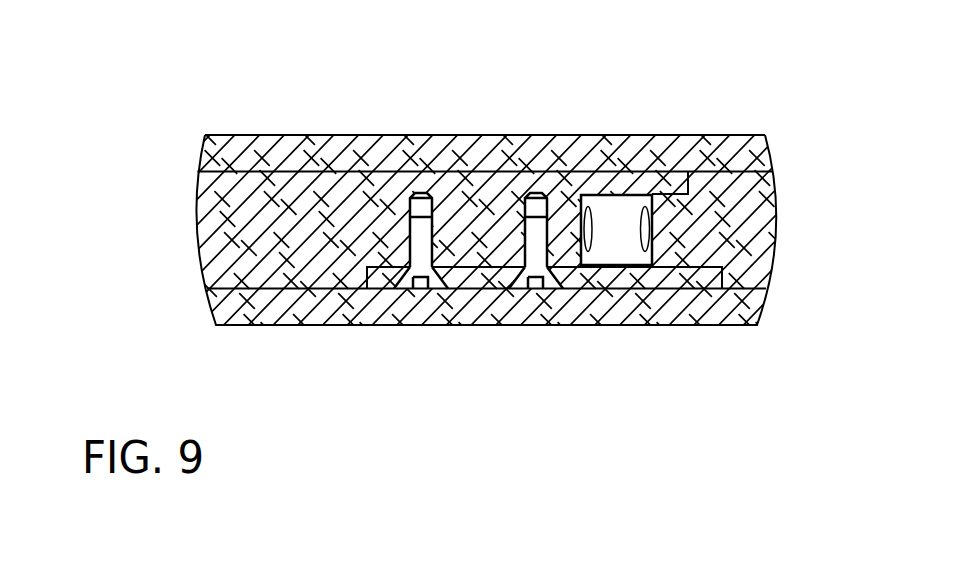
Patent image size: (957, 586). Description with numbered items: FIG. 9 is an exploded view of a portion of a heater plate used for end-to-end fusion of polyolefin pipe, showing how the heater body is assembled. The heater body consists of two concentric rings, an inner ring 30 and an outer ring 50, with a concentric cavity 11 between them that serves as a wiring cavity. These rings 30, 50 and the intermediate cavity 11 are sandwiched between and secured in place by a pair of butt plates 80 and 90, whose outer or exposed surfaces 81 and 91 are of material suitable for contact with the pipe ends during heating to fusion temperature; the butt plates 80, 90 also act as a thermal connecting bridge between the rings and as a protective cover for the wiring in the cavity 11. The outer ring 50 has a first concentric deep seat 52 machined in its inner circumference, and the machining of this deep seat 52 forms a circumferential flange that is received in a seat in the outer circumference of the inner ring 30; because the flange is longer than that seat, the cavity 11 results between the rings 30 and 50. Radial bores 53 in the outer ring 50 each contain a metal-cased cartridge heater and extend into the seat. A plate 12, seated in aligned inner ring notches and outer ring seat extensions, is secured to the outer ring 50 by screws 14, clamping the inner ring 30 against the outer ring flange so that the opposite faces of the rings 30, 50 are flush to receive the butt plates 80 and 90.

The concentric cavity 11 is at (625, 240).
The plate 12 is at (672, 270).
The screw 14 is at (530, 290).
The inner ring 30 is at (757, 220).
The outer ring 50 is at (275, 217).
The first concentric deep seat 52 is at (609, 196).
The outer ring radial bore 53 is at (660, 212).
The butt plate 80 is at (327, 307).
The outer surface 81 is at (369, 320).
The butt plate 90 is at (437, 152).
The outer surface 91 is at (540, 138).